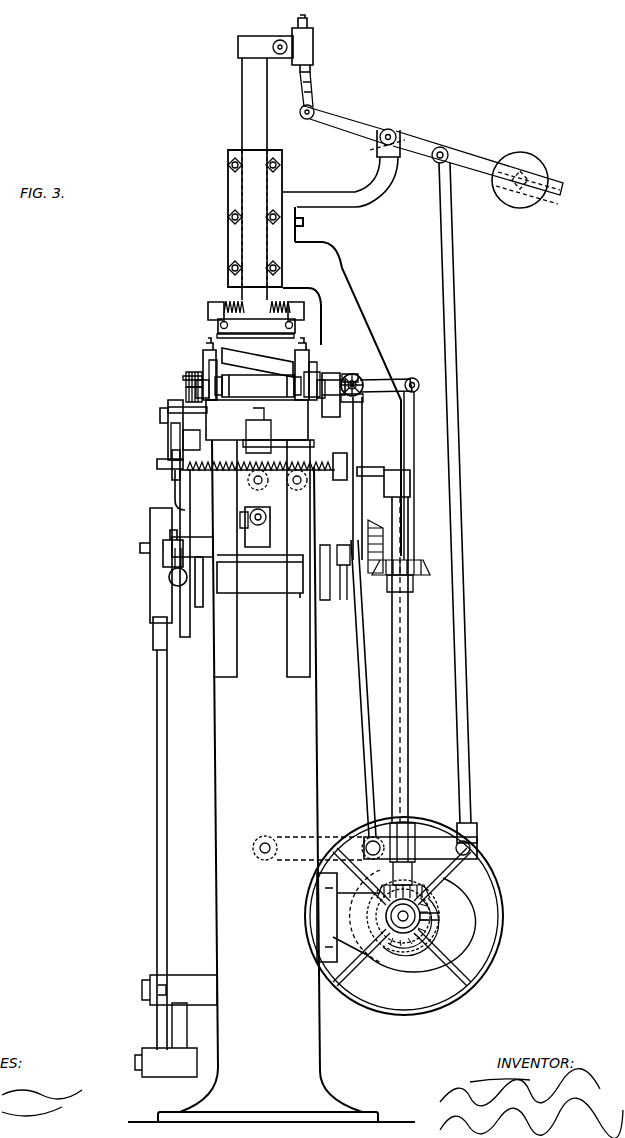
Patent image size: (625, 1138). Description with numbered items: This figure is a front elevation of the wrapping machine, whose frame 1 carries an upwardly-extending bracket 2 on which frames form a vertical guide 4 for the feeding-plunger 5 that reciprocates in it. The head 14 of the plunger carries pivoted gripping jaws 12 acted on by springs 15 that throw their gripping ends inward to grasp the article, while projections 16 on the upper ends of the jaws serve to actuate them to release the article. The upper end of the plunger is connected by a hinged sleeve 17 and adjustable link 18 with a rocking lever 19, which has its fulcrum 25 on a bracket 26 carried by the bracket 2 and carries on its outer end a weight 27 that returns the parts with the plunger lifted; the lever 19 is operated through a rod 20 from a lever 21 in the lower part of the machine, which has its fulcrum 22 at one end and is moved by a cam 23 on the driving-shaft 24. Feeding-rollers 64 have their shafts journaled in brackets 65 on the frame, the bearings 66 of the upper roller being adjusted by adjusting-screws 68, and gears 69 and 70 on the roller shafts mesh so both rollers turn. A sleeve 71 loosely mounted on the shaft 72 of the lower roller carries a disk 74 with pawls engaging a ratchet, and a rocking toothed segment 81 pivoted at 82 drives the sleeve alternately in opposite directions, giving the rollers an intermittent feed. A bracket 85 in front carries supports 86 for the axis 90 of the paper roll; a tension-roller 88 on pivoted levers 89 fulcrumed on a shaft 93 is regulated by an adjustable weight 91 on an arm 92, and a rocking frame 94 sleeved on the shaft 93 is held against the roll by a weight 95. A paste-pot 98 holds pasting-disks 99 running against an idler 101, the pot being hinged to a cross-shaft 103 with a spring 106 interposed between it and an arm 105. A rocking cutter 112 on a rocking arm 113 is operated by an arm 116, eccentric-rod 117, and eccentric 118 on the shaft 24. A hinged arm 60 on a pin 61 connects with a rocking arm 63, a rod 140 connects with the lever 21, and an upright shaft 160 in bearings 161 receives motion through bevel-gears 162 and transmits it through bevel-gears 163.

The frame 1 is at (234, 743).
The upwardly-extending bracket 2 is at (342, 381).
The vertical guide 4 is at (230, 152).
The feeding-plunger 5 is at (265, 169).
The gripping jaws 12 is at (255, 342).
The head of the plunger 14 is at (256, 326).
The springs 15 is at (224, 305).
The projections 16 is at (208, 308).
The hinged sleeve 17 is at (313, 45).
The adjustable link 18 is at (313, 96).
The rocking lever 19 is at (347, 125).
The rod 20 is at (455, 405).
The lever 21 is at (455, 845).
The fulcrum 22 is at (266, 843).
The cam 23 is at (317, 891).
The driving-shaft 24 is at (420, 917).
The fulcrum 25 is at (394, 132).
The bracket 26 is at (381, 192).
The weight 27 is at (496, 177).
The hinged arm 60 is at (170, 418).
The pin 61 is at (175, 406).
The rocking arm 63 is at (172, 442).
The feeding-rollers 64 is at (306, 376).
The brackets 65 is at (200, 382).
The bearings 66 is at (185, 378).
The adjusting-screws 68 is at (210, 342).
The gear 69 is at (186, 376).
The gear 70 is at (186, 393).
The sleeve 71 is at (360, 384).
The shaft 72 is at (362, 386).
The disk 74 is at (340, 405).
The rocking toothed segment 81 is at (362, 440).
The pivot 82 is at (353, 565).
The bracket 85 is at (180, 510).
The supports 86 is at (160, 468).
The tension-roller 88 is at (260, 576).
The pivoted levers 89 is at (199, 607).
The axis 90 is at (172, 466).
The adjustable weight 91 is at (169, 578).
The arm 92 is at (163, 550).
The shaft 93 is at (228, 557).
The rocking frame 94 is at (264, 518).
The weight 95 is at (240, 520).
The paste-pot 98 is at (257, 420).
The pasting-disks 99 is at (209, 365).
The idler 101 is at (262, 395).
The cross-shaft 103 is at (184, 434).
The arm 105 is at (300, 439).
The spring 106 is at (265, 416).
The rocking cutter 112 is at (258, 360).
The rocking arm 113 is at (350, 374).
The arm 116 is at (419, 385).
The eccentric-rod 117 is at (416, 520).
The eccentric 118 is at (387, 947).
The rod 140 is at (360, 700).
The upright shaft 160 is at (408, 632).
The bearings 161 is at (414, 482).
The bevel-gears 162 is at (432, 890).
The bevel-gears 163 is at (410, 562).